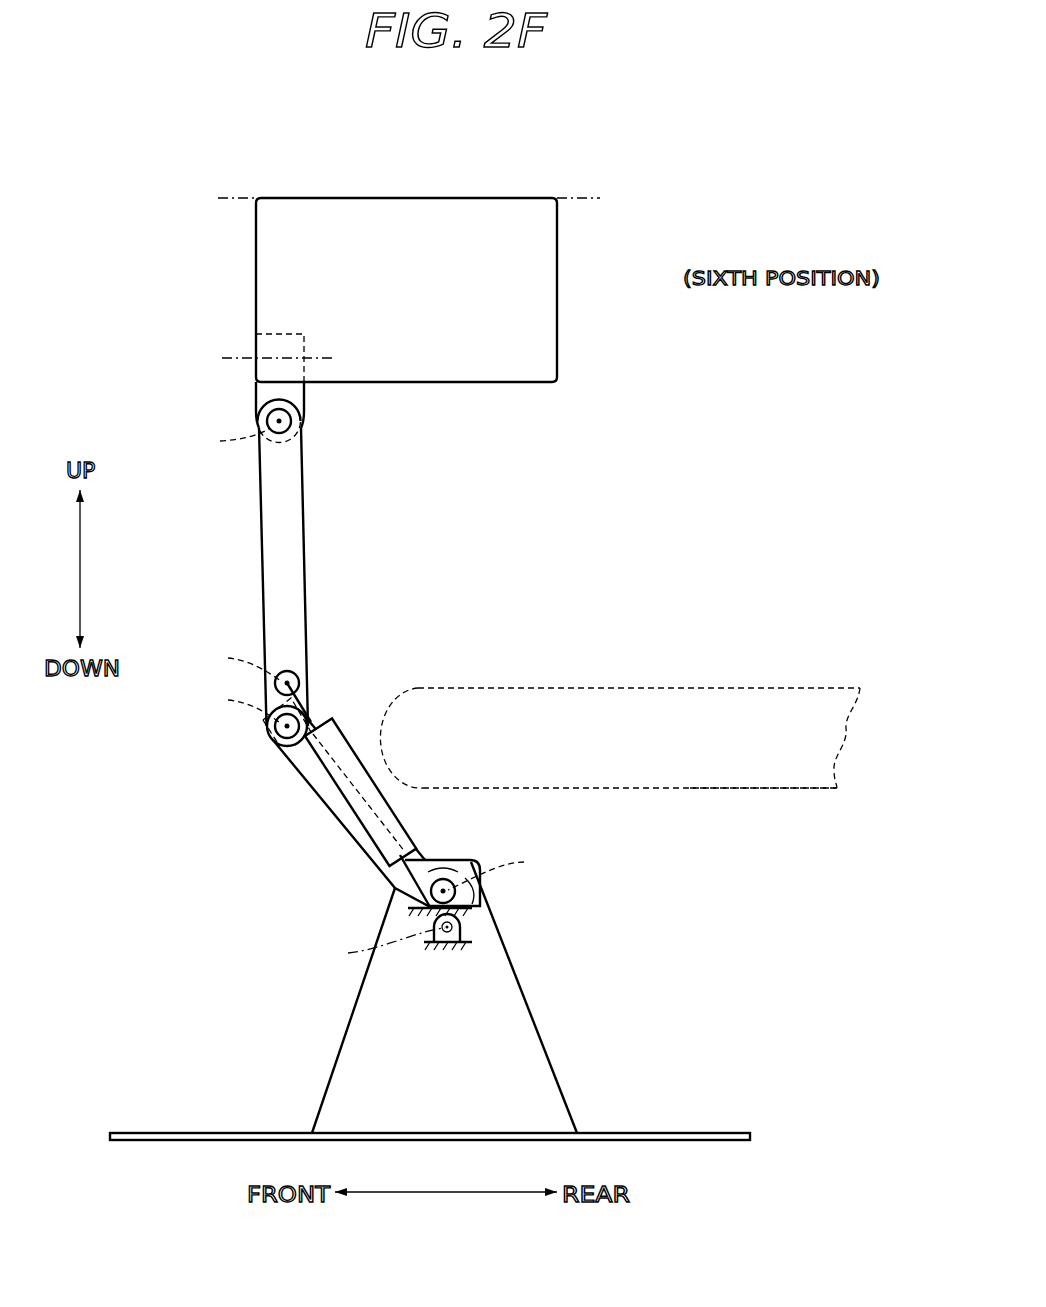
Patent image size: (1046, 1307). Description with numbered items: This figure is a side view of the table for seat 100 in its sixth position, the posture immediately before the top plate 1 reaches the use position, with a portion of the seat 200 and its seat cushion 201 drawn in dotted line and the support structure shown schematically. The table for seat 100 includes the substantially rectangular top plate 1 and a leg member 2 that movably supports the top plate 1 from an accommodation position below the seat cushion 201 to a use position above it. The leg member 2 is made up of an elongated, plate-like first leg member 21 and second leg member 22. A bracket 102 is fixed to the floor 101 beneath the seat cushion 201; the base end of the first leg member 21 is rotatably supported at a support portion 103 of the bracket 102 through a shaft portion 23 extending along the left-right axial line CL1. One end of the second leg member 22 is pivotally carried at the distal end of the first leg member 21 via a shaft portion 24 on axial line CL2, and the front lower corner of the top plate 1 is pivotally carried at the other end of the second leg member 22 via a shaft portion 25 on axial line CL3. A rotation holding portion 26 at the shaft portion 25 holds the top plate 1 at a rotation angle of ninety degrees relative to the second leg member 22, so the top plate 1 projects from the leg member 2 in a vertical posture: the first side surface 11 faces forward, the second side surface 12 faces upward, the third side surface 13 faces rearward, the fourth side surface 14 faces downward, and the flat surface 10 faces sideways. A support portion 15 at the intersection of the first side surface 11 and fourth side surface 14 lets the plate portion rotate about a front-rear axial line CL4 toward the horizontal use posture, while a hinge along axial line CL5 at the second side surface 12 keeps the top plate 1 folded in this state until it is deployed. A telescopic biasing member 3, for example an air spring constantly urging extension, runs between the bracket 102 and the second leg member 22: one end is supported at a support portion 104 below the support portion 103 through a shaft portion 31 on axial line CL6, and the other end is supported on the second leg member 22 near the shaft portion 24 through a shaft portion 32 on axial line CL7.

The table for seat 100 is at (112, 262).
The top plate 1 is at (562, 238).
The flat surface 10 is at (414, 352).
The first side surface 11 is at (256, 270).
The second side surface 12 is at (487, 198).
The third side surface 13 is at (558, 292).
The fourth side surface 14 is at (487, 383).
The support portion 15 is at (292, 334).
The leg member 2 is at (257, 553).
The second leg member 22 is at (264, 496).
The first leg member 21 is at (303, 787).
The shaft portion 23 is at (441, 878).
The shaft portion 24 is at (283, 746).
The shaft portion 25 is at (292, 430).
The rotation holding portion 26 is at (300, 398).
The biasing member 3 is at (358, 831).
The shaft portion 31 is at (447, 945).
The shaft portion 32 is at (297, 678).
The floor 101 is at (710, 1133).
The bracket 102 is at (562, 1083).
The support portion 103 is at (480, 880).
The support portion 104 is at (470, 932).
The seat 200 is at (668, 684).
The seat cushion 201 is at (690, 788).
The axial line CL1 is at (507, 869).
The axial line CL2 is at (230, 703).
The axial line CL3 is at (221, 440).
The axial line CL4 is at (252, 358).
The axial line CL5 is at (386, 198).
The axial line CL6 is at (371, 946).
The axial line CL7 is at (231, 662).